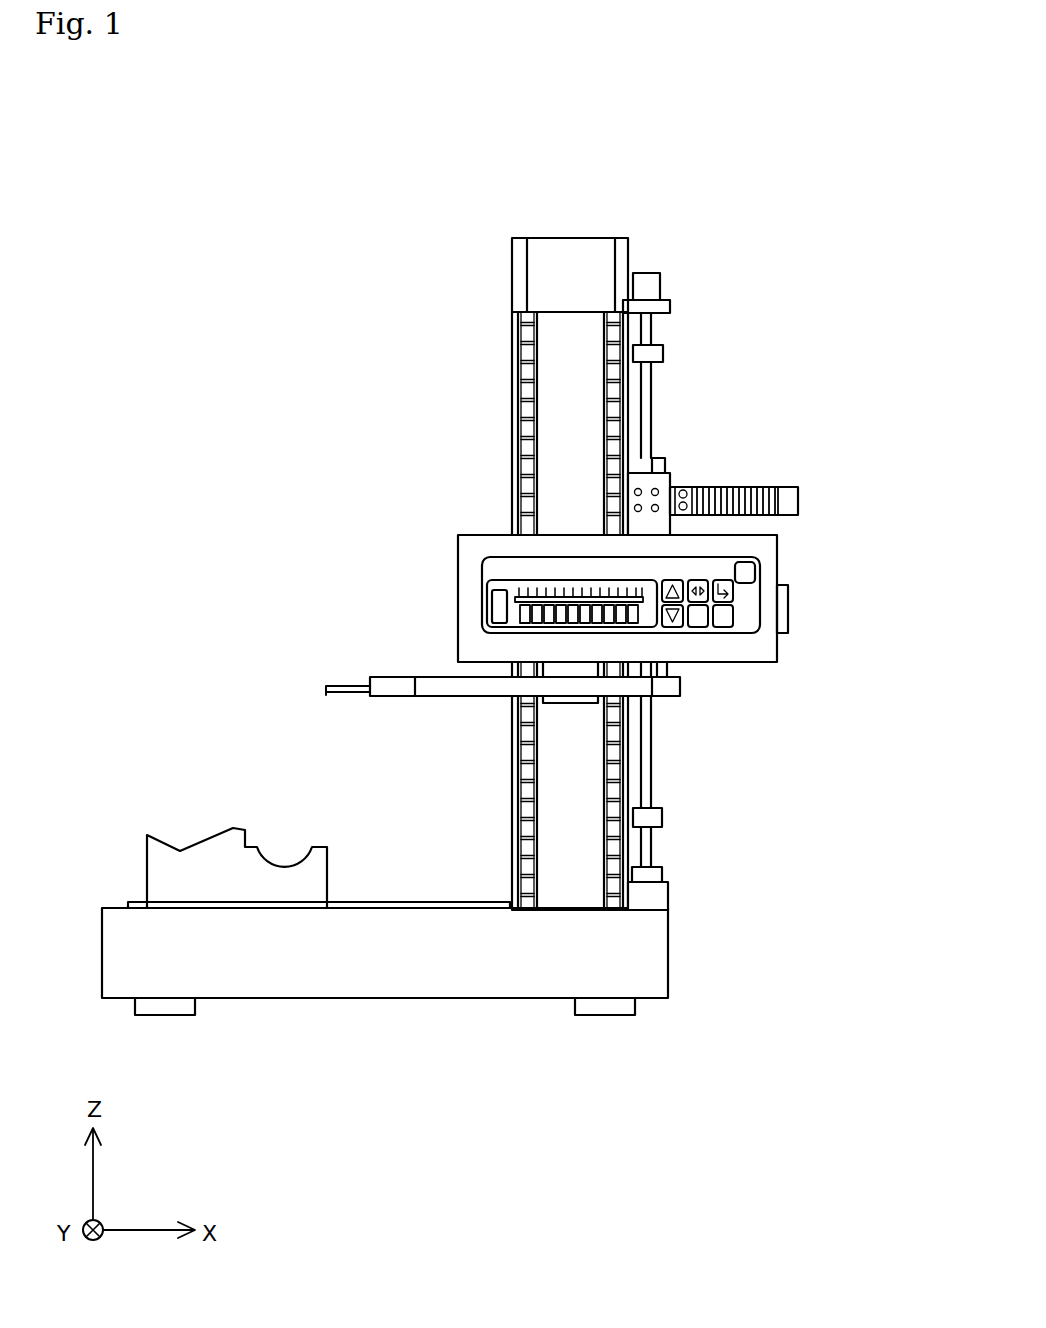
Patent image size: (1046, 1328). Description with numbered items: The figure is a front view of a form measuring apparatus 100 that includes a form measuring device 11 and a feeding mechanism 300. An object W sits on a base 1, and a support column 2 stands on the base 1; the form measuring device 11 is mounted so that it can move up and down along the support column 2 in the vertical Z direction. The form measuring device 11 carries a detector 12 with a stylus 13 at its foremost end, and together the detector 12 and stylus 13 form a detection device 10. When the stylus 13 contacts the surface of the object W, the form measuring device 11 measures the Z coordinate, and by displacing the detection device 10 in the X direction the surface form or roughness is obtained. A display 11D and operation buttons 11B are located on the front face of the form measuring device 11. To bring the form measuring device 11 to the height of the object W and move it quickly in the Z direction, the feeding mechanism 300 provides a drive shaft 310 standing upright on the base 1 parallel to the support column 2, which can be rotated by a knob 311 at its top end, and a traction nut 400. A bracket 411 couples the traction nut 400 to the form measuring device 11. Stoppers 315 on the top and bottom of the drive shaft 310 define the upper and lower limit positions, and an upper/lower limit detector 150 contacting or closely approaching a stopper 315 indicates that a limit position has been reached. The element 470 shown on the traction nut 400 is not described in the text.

The form measuring apparatus 100 is at (705, 184).
The base 1 is at (366, 992).
The object W is at (168, 860).
The support column 2 is at (543, 388).
The detection device 10 is at (498, 742).
The form measuring device 11 is at (607, 611).
The operation buttons 11B is at (680, 599).
The display 11D is at (512, 607).
The detector 12 is at (396, 690).
The stylus 13 is at (344, 731).
The upper/lower limit detector 150 is at (661, 459).
The feeding mechanism 300 is at (692, 376).
The drive shaft 310 is at (650, 400).
The knob 311 is at (651, 282).
The stopper 315 is at (662, 352).
The traction nut 400 is at (749, 472).
The bracket 411 is at (660, 523).
The grip 470 is at (790, 503).